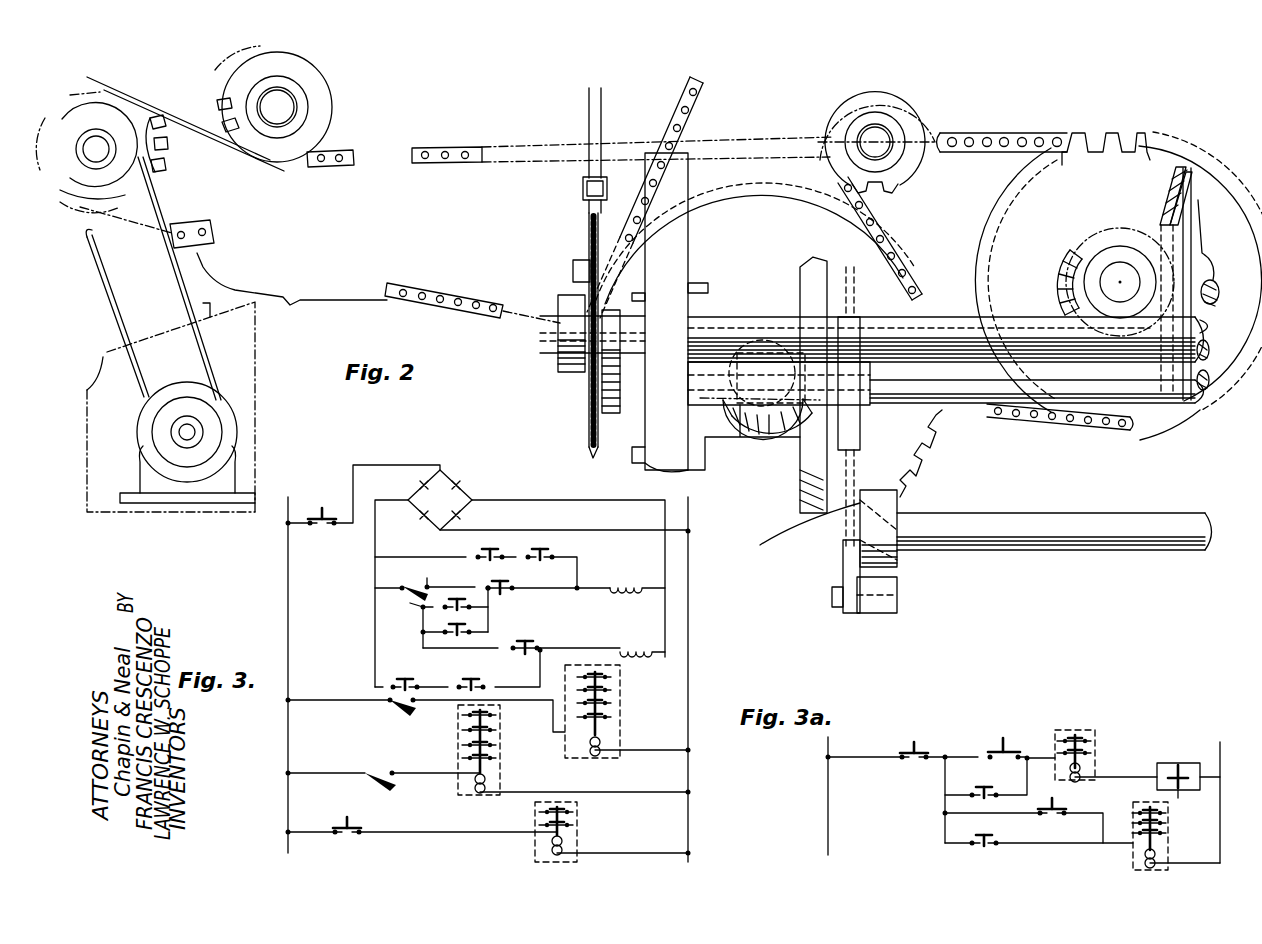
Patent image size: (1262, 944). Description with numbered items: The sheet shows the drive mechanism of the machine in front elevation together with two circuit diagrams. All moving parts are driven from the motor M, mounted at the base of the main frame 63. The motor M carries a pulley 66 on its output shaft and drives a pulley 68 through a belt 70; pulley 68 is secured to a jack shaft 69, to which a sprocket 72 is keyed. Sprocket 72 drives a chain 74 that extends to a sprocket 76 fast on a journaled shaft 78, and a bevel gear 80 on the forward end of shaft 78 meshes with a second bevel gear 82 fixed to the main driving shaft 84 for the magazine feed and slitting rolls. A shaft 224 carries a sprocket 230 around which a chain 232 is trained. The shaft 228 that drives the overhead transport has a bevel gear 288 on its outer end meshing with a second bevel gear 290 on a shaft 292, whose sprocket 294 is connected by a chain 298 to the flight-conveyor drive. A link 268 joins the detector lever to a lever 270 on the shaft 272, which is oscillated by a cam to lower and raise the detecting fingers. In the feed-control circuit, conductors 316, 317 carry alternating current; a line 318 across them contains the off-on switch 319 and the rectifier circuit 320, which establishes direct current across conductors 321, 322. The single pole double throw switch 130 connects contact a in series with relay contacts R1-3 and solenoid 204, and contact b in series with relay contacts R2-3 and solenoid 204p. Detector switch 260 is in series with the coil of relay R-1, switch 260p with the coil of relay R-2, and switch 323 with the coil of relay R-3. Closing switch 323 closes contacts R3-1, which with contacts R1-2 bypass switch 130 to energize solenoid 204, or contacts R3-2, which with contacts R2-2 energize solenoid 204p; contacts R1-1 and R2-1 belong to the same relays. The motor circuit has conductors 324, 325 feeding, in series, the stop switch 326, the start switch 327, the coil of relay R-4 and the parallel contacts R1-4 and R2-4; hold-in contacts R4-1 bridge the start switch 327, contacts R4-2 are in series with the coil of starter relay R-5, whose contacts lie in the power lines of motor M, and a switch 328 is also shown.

In FIG. 2, the main frame 63 is at (257, 350).
In FIG. 2, the pulley 66 is at (170, 395).
In FIG. 2, the pulley 68 is at (137, 192).
In FIG. 2, the jack shaft 69 is at (112, 150).
In FIG. 2, the belt 70 is at (205, 308).
In FIG. 2, the sprocket 72 is at (170, 167).
In FIG. 2, the chain 74 is at (340, 168).
In FIG. 2, the sprocket 76 is at (1115, 133).
In FIG. 2, the shaft 78 is at (1130, 263).
In FIG. 2, the bevel gear 80 is at (1062, 263).
In FIG. 2, the second bevel gear 82 is at (1175, 167).
In FIG. 2, the main driving shaft 84 is at (1207, 258).
In FIG. 2, the motor M is at (240, 430).
In FIG. 2, the shaft 224 is at (950, 317).
In FIG. 2, the shaft 228 is at (1040, 413).
In FIG. 2, the sprocket 230 is at (588, 427).
In FIG. 2, the chain 232 is at (583, 192).
In FIG. 2, the link 268 is at (843, 568).
In FIG. 2, the lever 270 is at (878, 615).
In FIG. 2, the shaft 272 is at (1023, 553).
In FIG. 2, the bevel gear 288 is at (800, 502).
In FIG. 2, the second bevel gear 290 is at (773, 437).
In FIG. 2, the shaft 292 is at (740, 320).
In FIG. 2, the sprocket 294 is at (928, 477).
In FIG. 2, the chain 298 is at (688, 98).
In FIG. 3, the switch 130 is at (413, 587).
In FIG. 3, the solenoid 204 is at (640, 573).
In FIG. 3, the solenoid 204p is at (648, 636).
In FIG. 3, the conductor 316 is at (288, 613).
In FIG. 3, the conductor 317 is at (689, 667).
In FIG. 3, the line 318 is at (383, 465).
In FIG. 3, the off-on switch 319 is at (335, 500).
In FIG. 3, the capacity starved diode rectifier circuit 320 is at (515, 482).
In FIG. 3, the conductor 321 is at (375, 614).
In FIG. 3, the conductor 322 is at (668, 549).
In FIG. 3, the switch 323 is at (350, 818).
In FIG. 3A, the conductor 324 is at (832, 811).
In FIG. 3A, the conductor 325 is at (1220, 742).
In FIG. 3A, the stop switch 326 is at (930, 733).
In FIG. 3A, the start switch 327 is at (1018, 728).
In FIG. 3A, the switch 328 is at (1040, 810).
In FIG. 3, the microswitch 260 is at (390, 704).
In FIG. 3, the switch 260p is at (363, 776).
In FIG. 3, the relay R-1 is at (618, 758).
In FIG. 3, the relay R-2 is at (497, 795).
In FIG. 3, the relay R-3 is at (580, 812).
In FIG. 3A, the relay R-4 is at (1095, 730).
In FIG. 3A, the starter relay R-5 is at (1168, 840).
In FIG. 3, the relay contact R1-1 is at (560, 545).
In FIG. 3, the relay contacts R1-2 is at (470, 604).
In FIG. 3, the relay contacts R1-3 is at (487, 578).
In FIG. 3A, the contacts R1-4 is at (1168, 763).
In FIG. 3, the relay contact R2-1 is at (435, 628).
In FIG. 3, the contacts R2-2 is at (463, 673).
In FIG. 3, the relay contacts R2-3 is at (530, 640).
In FIG. 3A, the contacts R2-4 is at (1183, 797).
In FIG. 3, the contacts R3-1 is at (488, 544).
In FIG. 3, the contacts R3-2 is at (399, 671).
In FIG. 3A, the hold-in contacts R4-1 is at (987, 787).
In FIG. 3A, the contacts R4-2 is at (987, 836).